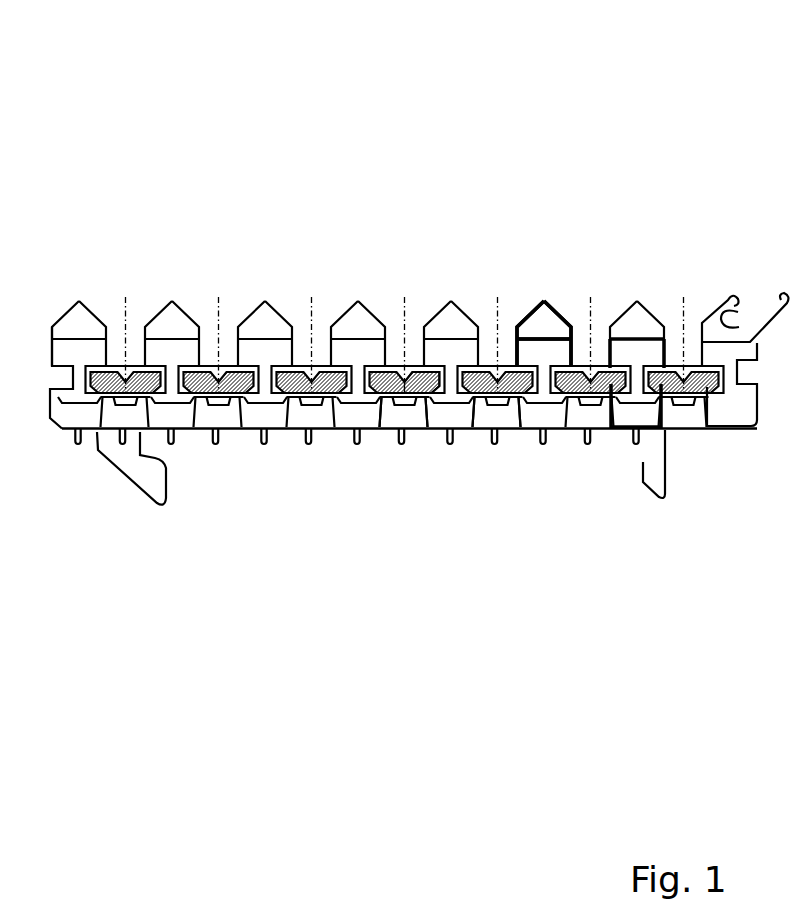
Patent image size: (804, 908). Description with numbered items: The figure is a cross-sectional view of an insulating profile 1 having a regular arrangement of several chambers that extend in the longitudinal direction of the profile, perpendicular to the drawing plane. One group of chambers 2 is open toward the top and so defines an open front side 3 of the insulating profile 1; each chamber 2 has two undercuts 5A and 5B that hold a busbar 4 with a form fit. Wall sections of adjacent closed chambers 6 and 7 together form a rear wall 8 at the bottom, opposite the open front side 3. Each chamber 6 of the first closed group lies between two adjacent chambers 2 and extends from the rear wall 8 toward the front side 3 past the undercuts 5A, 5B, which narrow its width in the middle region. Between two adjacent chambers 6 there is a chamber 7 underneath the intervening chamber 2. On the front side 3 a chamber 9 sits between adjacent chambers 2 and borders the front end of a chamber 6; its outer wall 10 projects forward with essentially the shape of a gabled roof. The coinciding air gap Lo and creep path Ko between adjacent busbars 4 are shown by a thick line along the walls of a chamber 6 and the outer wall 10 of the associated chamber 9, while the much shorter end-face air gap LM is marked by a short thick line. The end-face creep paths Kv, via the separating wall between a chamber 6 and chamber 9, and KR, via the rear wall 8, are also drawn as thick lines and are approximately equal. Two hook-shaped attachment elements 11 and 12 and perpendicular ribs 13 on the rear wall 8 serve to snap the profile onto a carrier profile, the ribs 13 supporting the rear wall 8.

The insulating profile 1 is at (399, 300).
The chamber of the open group 2 is at (217, 342).
The open front side 3 is at (48, 297).
The busbar 4 is at (587, 378).
The undercut 5A is at (377, 370).
The undercut 5B is at (432, 368).
The chamber of the first closed group 6 is at (352, 407).
The chamber of another closed group 7 is at (495, 414).
The rear wall 8 is at (240, 434).
The chamber of another closed group 9 is at (453, 327).
The outer wall 10 is at (284, 315).
The hook-shaped attachment element 11 is at (138, 492).
The hook-shaped attachment element 12 is at (653, 490).
The rib 13 is at (402, 444).
The air gap Lo is at (543, 333).
The creep path Ko is at (581, 273).
The creep path Kv is at (636, 346).
The creep path KR is at (626, 414).
The air gap LM is at (668, 417).